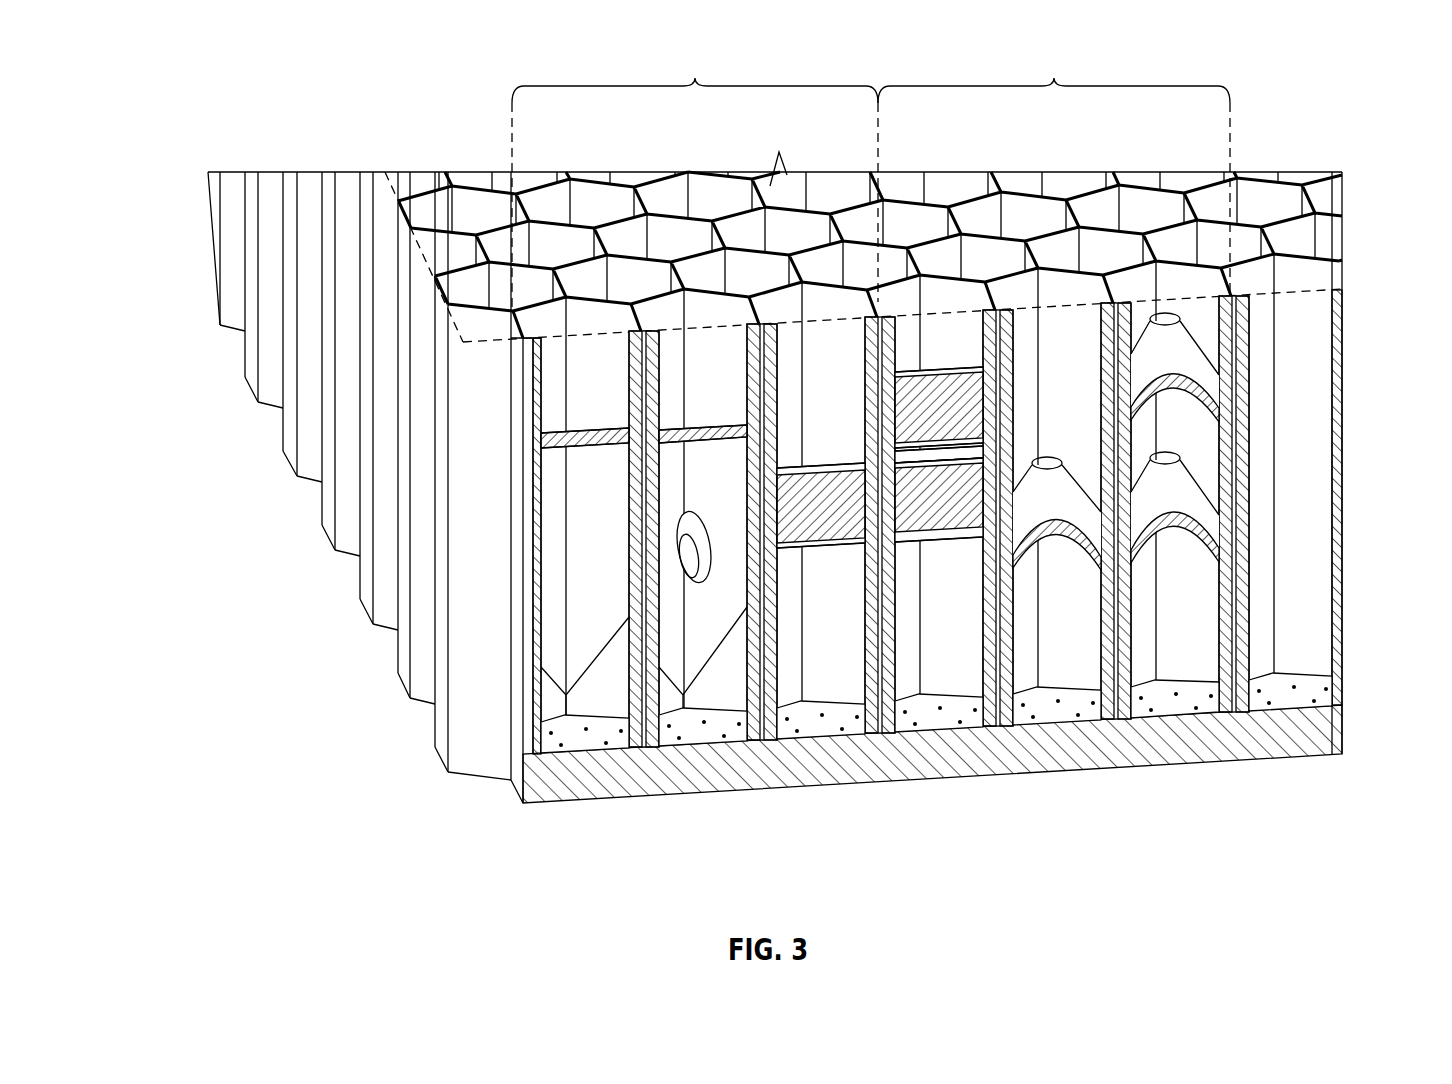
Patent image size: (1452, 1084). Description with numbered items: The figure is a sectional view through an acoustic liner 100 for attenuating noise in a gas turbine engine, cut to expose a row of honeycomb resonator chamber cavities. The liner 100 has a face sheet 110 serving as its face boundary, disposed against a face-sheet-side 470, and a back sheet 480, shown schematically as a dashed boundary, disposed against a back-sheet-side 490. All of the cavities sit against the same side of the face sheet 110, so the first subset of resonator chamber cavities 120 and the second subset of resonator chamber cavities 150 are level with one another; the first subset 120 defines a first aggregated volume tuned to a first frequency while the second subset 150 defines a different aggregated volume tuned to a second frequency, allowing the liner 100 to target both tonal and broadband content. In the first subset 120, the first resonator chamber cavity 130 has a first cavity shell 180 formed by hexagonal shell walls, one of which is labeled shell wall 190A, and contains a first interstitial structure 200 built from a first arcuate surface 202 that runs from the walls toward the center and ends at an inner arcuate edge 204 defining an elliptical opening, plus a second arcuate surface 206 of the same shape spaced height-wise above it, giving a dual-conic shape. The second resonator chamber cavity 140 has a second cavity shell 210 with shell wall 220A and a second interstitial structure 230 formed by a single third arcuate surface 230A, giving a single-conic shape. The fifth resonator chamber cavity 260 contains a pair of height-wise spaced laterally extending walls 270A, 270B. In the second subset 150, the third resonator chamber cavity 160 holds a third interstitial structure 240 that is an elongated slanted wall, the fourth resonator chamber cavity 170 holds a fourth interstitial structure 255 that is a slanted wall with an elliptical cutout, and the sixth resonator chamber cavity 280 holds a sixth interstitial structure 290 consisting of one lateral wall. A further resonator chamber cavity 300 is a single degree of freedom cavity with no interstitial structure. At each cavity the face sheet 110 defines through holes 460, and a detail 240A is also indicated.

The acoustic liner 100 is at (238, 254).
The face sheet 110 is at (1320, 749).
The first subset of resonator chamber cavities 120 is at (1054, 166).
The first resonator chamber cavity 130 is at (1232, 292).
The second resonator chamber cavity 140 is at (1068, 387).
The second subset of resonator chamber cavities 150 is at (695, 176).
The third resonator chamber cavity 160 is at (600, 627).
The fourth resonator chamber cavity 170 is at (673, 512).
The first cavity shell 180 is at (1240, 346).
The shell wall 190A is at (1236, 267).
The first interstitial structure 200 is at (1072, 510).
The first arcuate surface 202 is at (1196, 482).
The inner arcuate edge 204 is at (1168, 444).
The second arcuate surface 206 is at (1204, 379).
The second cavity shell 210 is at (990, 282).
The shell wall 220A is at (1060, 258).
The second interstitial structure 230 is at (1176, 518).
The third arcuate surface 230A is at (1043, 530).
The third interstitial structure 240 is at (600, 560).
The plate 240A is at (668, 703).
The fourth interstitial structure 255 is at (693, 560).
The fifth resonator chamber cavity 260 is at (925, 545).
The laterally extending wall 270A is at (917, 417).
The laterally extending wall 270B is at (965, 518).
The sixth resonator chamber cavity 280 is at (815, 697).
The sixth interstitial structure 290 is at (813, 527).
The resonator chamber cavity 300 is at (1285, 688).
The through holes 460 is at (572, 745).
The face-sheet-side 470 is at (334, 628).
The back sheet 480 is at (414, 190).
The back-sheet-side 490 is at (410, 240).